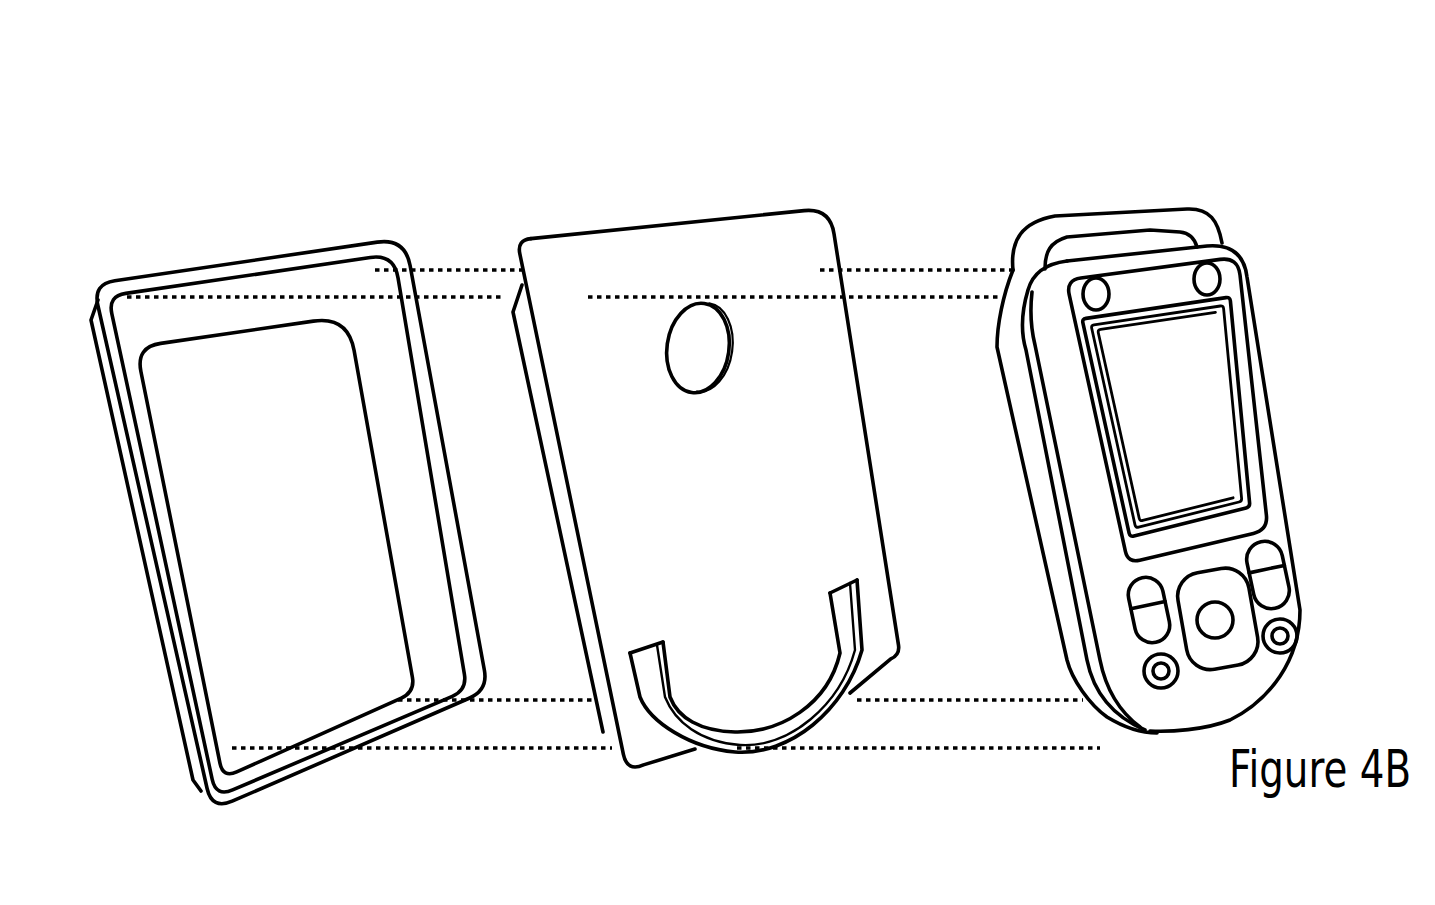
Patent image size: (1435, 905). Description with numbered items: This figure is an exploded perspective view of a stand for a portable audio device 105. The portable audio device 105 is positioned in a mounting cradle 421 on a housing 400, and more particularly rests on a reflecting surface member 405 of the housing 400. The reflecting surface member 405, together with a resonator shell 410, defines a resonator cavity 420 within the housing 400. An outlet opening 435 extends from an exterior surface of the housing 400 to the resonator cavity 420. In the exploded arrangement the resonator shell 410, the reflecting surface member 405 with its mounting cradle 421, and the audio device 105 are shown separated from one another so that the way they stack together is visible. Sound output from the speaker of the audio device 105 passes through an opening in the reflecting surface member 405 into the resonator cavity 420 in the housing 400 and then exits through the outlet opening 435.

The housing 400 is at (883, 113).
The resonator shell 410 is at (281, 509).
The outlet opening 435 is at (232, 260).
The resonator cavity 420 is at (290, 697).
The reflecting surface member 405 is at (706, 454).
The mounting cradle 421 is at (777, 730).
The portable audio device 105 is at (1194, 220).